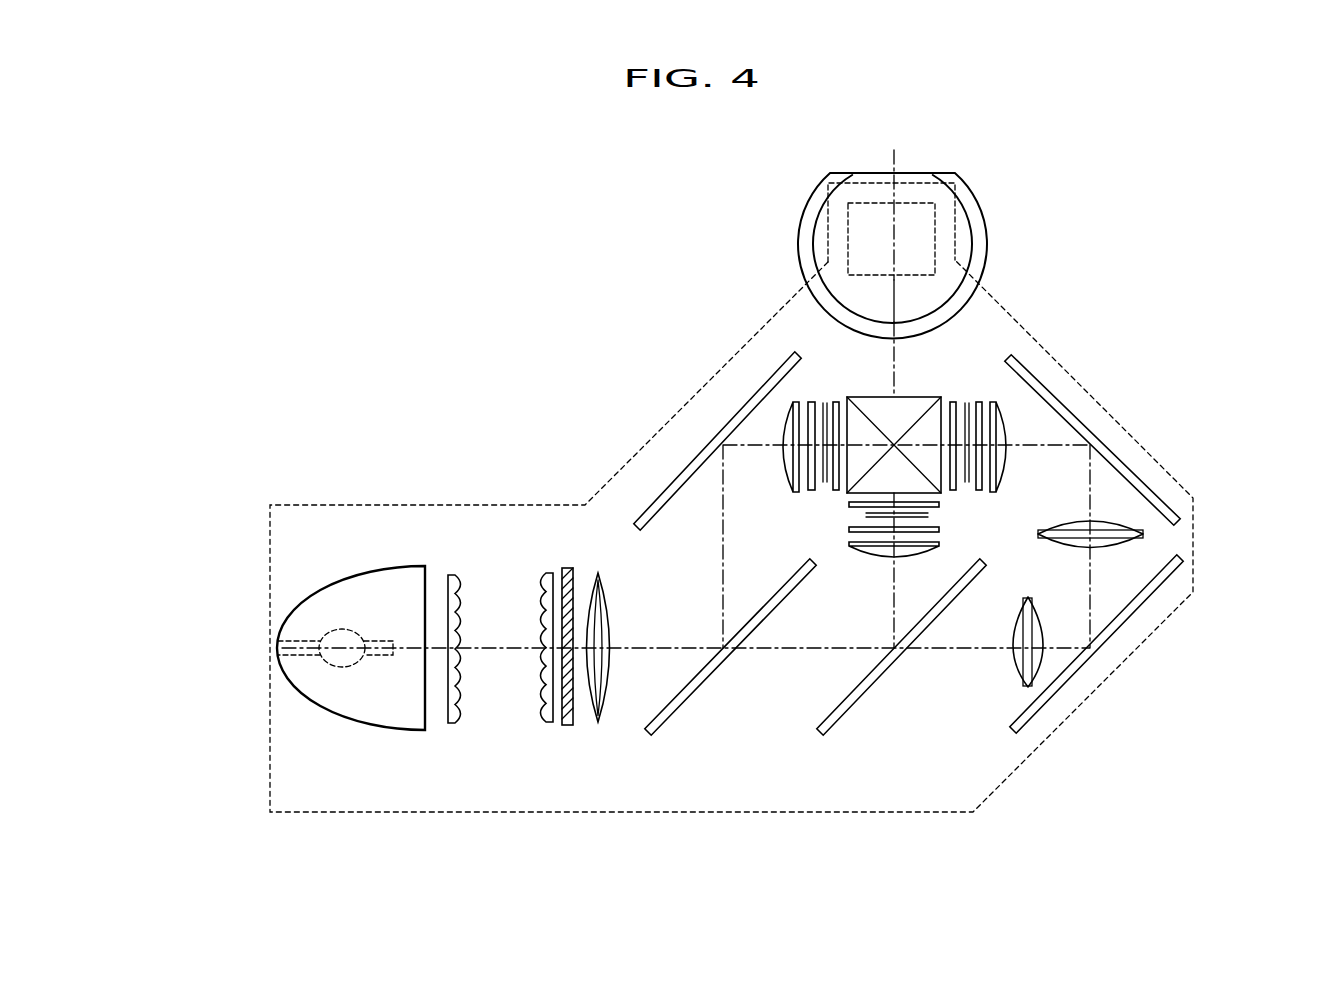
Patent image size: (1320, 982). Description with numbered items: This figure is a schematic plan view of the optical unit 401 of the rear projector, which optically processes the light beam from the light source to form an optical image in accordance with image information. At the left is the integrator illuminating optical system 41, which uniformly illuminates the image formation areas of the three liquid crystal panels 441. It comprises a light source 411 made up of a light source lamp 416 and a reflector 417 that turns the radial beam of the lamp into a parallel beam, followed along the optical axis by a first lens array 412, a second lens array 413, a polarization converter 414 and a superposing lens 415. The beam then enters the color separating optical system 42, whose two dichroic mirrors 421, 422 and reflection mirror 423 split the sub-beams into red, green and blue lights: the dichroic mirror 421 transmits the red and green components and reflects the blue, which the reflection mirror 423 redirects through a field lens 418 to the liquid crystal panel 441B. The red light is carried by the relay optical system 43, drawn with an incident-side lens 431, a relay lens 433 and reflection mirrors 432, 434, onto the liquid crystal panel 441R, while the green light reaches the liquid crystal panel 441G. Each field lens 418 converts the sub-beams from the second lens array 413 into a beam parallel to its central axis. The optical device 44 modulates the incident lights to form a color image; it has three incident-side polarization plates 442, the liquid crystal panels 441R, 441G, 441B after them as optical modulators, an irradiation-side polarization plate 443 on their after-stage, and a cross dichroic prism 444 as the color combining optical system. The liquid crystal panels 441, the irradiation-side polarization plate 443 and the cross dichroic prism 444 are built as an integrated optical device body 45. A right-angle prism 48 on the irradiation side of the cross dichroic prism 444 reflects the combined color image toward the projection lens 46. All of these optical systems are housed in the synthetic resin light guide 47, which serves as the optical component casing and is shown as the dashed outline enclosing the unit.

The optical unit 401 is at (392, 240).
The integrator illuminating optical system 41 is at (348, 527).
The light source 411 is at (290, 671).
The first lens array 412 is at (455, 725).
The second lens array 413 is at (550, 724).
The polarization converter 414 is at (568, 727).
The superposing lens 415 is at (597, 572).
The light source lamp 416 is at (303, 657).
The reflector 417 is at (325, 707).
The field lens 418 is at (797, 490).
The color separating optical system 42 is at (797, 773).
The dichroic mirror 421 is at (670, 716).
The dichroic mirror 422 is at (840, 714).
The reflection mirror 423 is at (672, 483).
The relay optical system 43 is at (1203, 418).
The incident-side lens 431 is at (1015, 660).
The reflection mirror 432 is at (1042, 703).
The relay lens 433 is at (1143, 533).
The reflection mirror 434 is at (1147, 483).
The optical device 44 is at (1160, 195).
The liquid crystal panel 441 is at (901, 419).
The liquid crystal panel for blue 441B is at (825, 400).
The liquid crystal panel for red 441R is at (967, 400).
The liquid crystal panel for green 441G is at (942, 508).
The incident-side polarization plate 442 is at (811, 400).
The irradiation-side polarization plate 443 is at (836, 400).
The cross dichroic prism 444 is at (908, 403).
The optical device body 45 is at (943, 221).
The projection lens 46 is at (938, 223).
The light guide 47 is at (905, 812).
The right-angle prism 48 is at (883, 170).